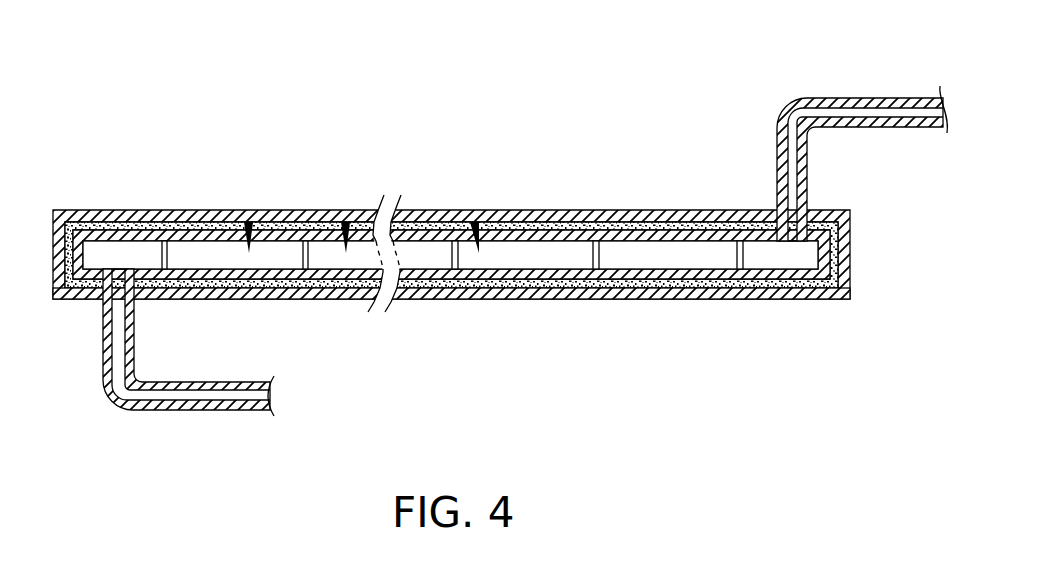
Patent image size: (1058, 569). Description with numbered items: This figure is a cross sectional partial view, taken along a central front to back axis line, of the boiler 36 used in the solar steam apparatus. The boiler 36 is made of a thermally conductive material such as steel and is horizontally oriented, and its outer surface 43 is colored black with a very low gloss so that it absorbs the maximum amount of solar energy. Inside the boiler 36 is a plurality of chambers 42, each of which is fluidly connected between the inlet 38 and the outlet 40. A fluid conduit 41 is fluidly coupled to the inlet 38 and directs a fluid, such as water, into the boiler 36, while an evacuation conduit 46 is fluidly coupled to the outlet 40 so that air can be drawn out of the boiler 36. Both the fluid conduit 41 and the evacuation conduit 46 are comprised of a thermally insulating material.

The boiler 36 is at (54, 210).
The inlet 38 is at (786, 241).
The outlet 40 is at (129, 230).
The fluid conduit 41 is at (100, 362).
The chambers 42 is at (474, 223).
The outer surface 43 is at (331, 299).
The evacuation conduit 46 is at (860, 98).